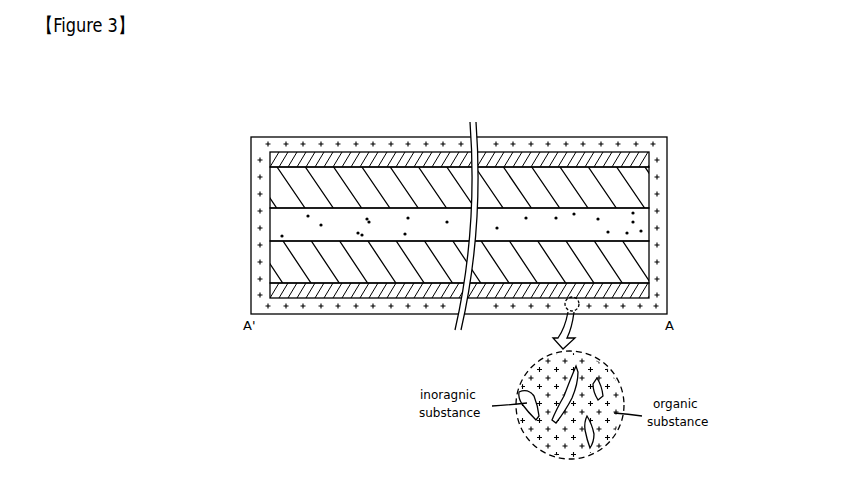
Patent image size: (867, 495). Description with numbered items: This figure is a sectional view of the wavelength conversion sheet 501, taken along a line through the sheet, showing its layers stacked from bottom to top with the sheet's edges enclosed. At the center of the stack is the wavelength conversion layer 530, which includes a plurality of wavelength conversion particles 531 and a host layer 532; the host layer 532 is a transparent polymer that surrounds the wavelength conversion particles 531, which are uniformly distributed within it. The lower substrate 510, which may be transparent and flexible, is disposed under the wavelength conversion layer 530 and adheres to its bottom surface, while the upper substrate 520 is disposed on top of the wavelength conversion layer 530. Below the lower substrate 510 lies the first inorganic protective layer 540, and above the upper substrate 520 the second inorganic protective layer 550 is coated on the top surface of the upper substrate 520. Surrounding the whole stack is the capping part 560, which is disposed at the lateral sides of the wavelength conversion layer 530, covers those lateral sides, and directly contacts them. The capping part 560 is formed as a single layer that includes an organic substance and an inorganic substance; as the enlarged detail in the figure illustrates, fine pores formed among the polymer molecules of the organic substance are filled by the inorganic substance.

The wavelength conversion sheet 501 is at (283, 107).
The capping part 560 is at (617, 136).
The second inorganic protective layer 550 is at (650, 156).
The upper substrate 520 is at (645, 182).
The wavelength conversion layer 530 is at (506, 225).
The host layer 532 is at (640, 217).
The wavelength conversion particles 531 is at (643, 232).
The lower substrate 510 is at (643, 260).
The first inorganic protective layer 540 is at (650, 288).